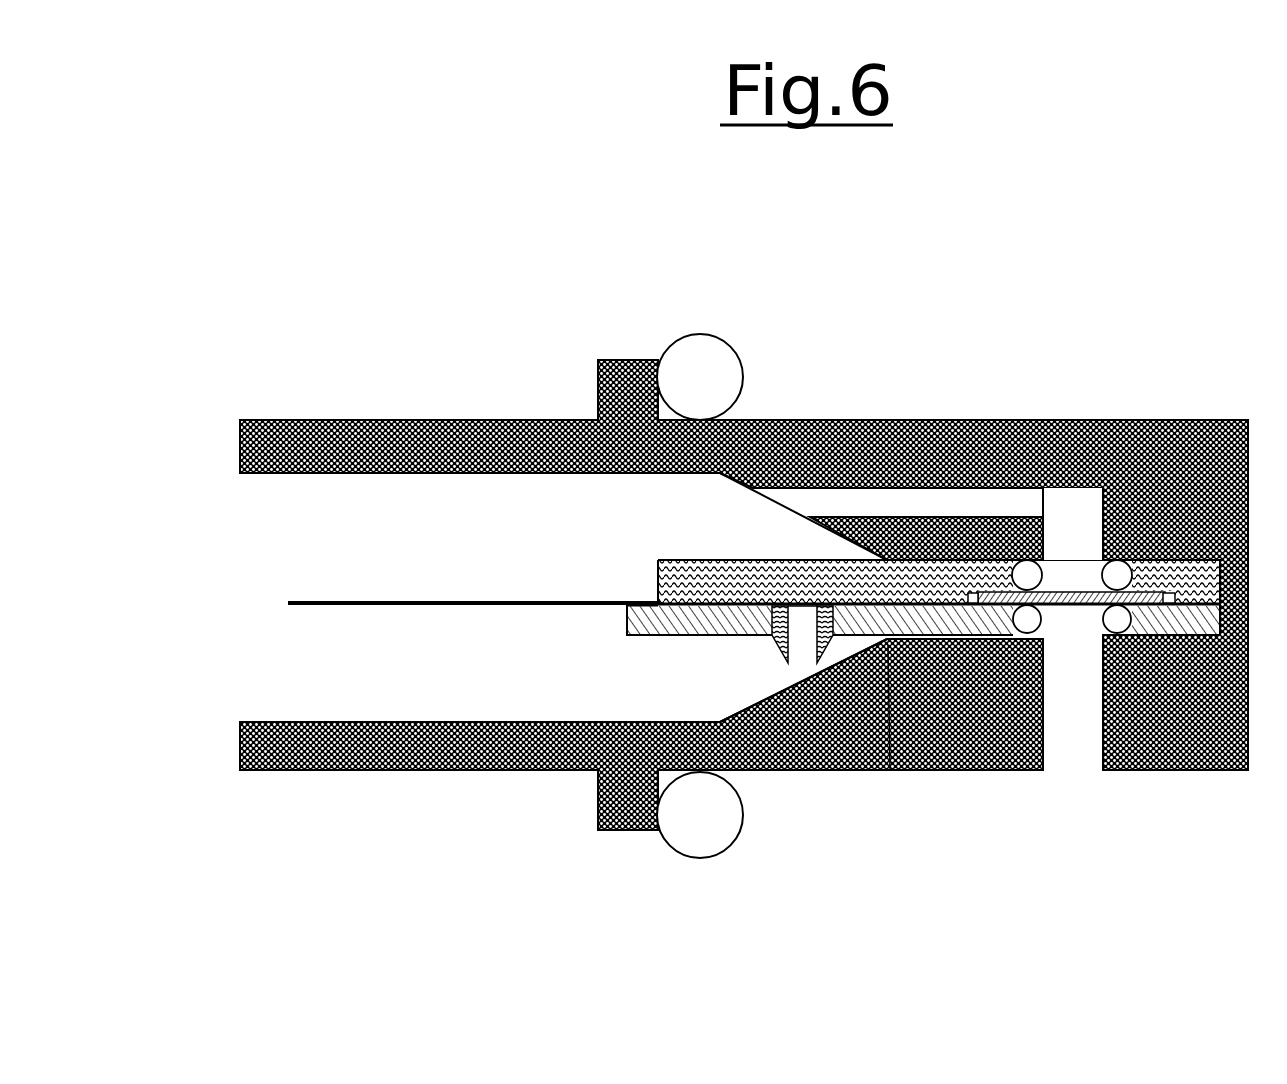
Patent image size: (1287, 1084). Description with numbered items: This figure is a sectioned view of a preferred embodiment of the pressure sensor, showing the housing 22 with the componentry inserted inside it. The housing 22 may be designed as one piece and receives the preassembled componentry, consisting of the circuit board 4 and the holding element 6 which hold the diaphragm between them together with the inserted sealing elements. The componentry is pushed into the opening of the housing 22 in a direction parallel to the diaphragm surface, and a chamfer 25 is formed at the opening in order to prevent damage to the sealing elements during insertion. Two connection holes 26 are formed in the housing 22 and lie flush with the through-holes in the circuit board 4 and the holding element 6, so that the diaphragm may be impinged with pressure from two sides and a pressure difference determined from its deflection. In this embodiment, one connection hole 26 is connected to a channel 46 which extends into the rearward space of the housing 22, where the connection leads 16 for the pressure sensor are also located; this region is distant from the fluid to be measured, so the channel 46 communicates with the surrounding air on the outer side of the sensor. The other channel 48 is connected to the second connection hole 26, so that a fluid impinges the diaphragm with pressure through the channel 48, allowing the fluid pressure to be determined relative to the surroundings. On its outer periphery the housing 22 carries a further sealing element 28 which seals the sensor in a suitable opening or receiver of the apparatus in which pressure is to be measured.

The circuit board 4 is at (652, 638).
The holding element 6 is at (680, 558).
The connection leads 16 is at (297, 600).
The housing 22 is at (1190, 422).
The chamfer 25 is at (890, 773).
The connection holes 26 is at (1067, 533).
The sealing element 28 is at (741, 362).
The channel 46 is at (927, 503).
The channel 48 is at (1057, 765).